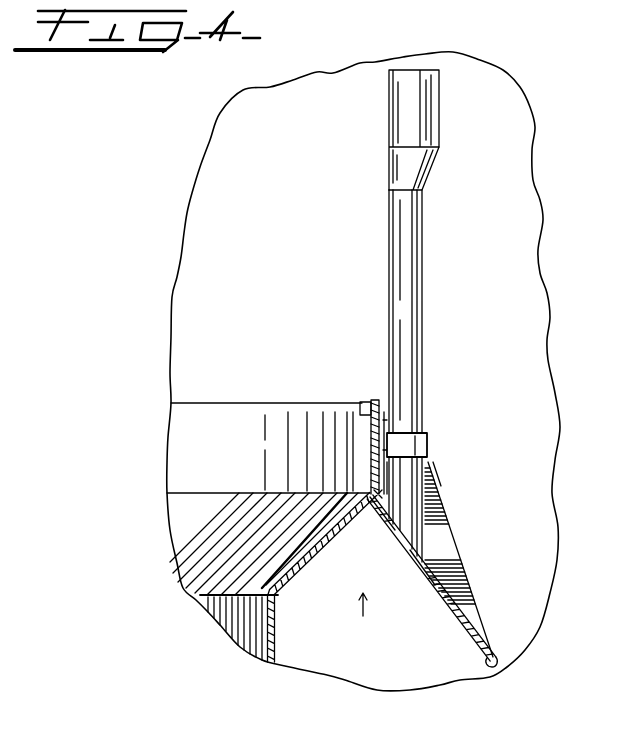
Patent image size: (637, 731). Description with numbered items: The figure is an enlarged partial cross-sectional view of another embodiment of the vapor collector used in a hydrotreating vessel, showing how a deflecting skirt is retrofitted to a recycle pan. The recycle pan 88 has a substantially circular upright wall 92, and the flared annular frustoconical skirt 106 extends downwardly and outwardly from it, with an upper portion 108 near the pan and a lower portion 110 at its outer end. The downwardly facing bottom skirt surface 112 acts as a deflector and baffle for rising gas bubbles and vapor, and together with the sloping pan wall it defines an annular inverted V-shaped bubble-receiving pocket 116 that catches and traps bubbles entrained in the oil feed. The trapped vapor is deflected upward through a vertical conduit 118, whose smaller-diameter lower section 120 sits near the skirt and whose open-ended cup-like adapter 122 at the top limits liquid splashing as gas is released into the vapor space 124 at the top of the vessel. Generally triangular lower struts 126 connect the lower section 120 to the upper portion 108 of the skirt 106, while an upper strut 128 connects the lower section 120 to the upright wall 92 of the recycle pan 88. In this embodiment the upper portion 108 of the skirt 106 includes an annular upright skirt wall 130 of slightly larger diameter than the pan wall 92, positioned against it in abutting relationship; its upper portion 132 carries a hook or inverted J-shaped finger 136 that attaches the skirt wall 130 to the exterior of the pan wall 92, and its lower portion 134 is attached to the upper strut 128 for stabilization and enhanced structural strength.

The recycle pan 88 is at (202, 403).
The upright wall 92 is at (372, 451).
The skirt 106 is at (462, 616).
The upper portion of the skirt 108 is at (378, 512).
The lower portion of the skirt 110 is at (493, 667).
The bottom skirt surface 112 is at (429, 576).
The bubble-receiving pocket 116 is at (362, 624).
The vertical conduit 118 is at (421, 264).
The lower section of conduit 120 is at (431, 467).
The adapter 122 is at (440, 96).
The vapor space 124 is at (362, 109).
The lower strut 126 is at (452, 529).
The upper strut 128 is at (330, 503).
The upright skirt wall 130 is at (372, 434).
The upper portion of upright skirt wall 132 is at (370, 418).
The lower portion of upright skirt wall 134 is at (380, 494).
The inverted J-shaped finger 136 is at (363, 412).